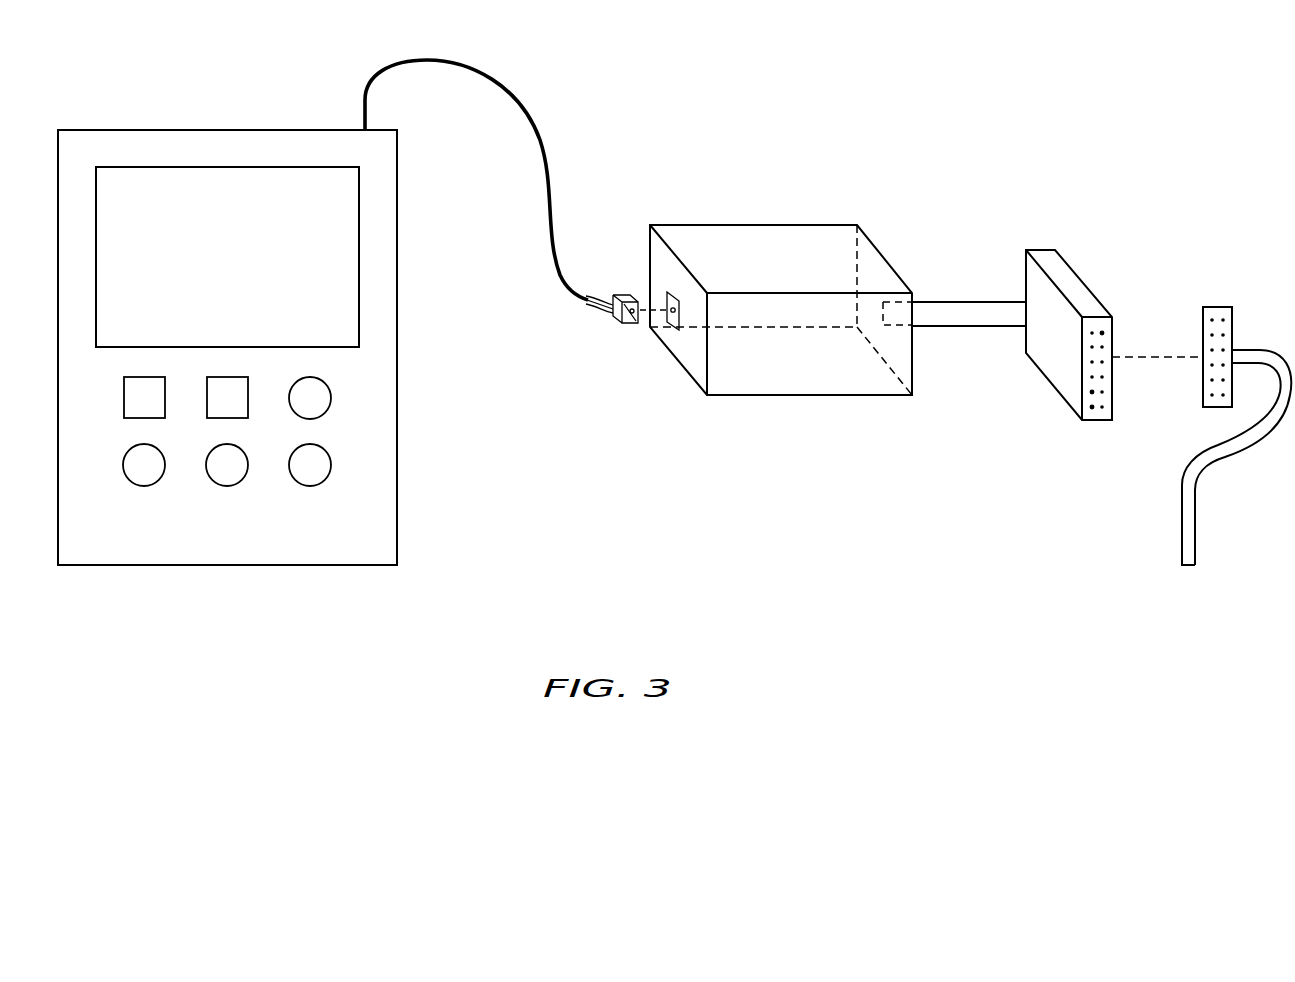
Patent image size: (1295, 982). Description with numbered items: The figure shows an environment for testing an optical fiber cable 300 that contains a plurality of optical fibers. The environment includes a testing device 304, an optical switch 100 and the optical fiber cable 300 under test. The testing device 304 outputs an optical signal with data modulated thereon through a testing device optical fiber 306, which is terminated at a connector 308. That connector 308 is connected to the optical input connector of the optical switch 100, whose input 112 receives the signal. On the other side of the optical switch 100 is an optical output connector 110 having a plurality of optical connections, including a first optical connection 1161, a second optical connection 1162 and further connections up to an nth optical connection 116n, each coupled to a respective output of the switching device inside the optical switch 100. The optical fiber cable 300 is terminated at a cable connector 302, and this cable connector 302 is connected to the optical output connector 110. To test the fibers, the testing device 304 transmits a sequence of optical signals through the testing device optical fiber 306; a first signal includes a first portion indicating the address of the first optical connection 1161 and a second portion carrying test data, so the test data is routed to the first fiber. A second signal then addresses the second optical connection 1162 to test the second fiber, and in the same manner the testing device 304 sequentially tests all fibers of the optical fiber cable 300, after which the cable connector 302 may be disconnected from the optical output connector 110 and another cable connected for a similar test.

The optical switch 100 is at (810, 395).
The optical output connector 110 is at (1077, 333).
The input 112 is at (668, 318).
The optical connection 116n is at (1102, 333).
The second optical connection 1162 is at (1090, 392).
The first optical connection 1161 is at (1081, 448).
The optical fiber cable 300 is at (1182, 507).
The cable connector 302 is at (1217, 307).
The testing device 304 is at (230, 565).
The testing device optical fiber 306 is at (428, 57).
The connector 308 is at (620, 322).